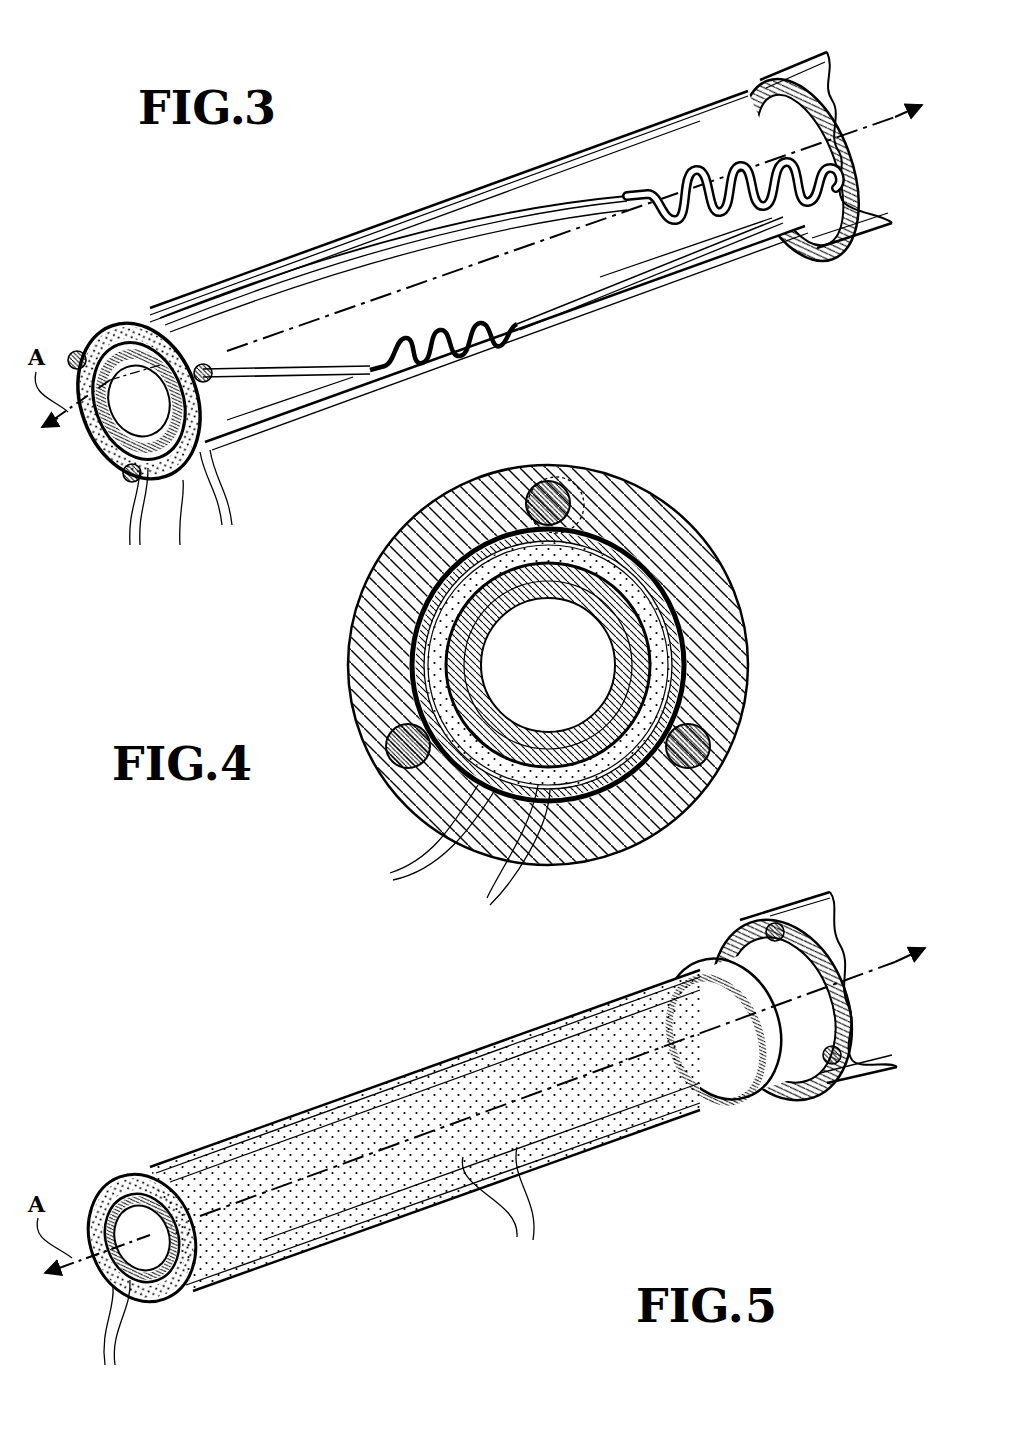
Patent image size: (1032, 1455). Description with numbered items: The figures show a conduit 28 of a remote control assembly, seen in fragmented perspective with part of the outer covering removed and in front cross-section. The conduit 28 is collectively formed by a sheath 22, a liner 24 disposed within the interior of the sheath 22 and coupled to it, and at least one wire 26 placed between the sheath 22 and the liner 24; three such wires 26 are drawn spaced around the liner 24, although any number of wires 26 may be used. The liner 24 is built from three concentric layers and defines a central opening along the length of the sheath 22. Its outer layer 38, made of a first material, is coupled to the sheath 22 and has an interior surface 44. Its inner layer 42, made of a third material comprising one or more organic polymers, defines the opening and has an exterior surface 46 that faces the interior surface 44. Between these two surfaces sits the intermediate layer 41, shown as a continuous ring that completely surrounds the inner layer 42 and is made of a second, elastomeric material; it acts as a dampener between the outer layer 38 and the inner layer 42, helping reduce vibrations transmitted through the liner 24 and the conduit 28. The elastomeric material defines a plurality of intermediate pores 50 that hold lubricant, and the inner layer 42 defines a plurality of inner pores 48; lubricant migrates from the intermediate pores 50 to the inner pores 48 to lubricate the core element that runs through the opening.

In FIG. 3, the sheath 22 is at (777, 77).
In FIG. 4, the sheath 22 is at (730, 600).
In FIG. 5, the sheath 22 is at (872, 1050).
In FIG. 3, the liner 24 is at (732, 268).
In FIG. 3, the wire 26 is at (503, 220).
In FIG. 4, the wire 26 is at (548, 503).
In FIG. 5, the wire 26 is at (803, 993).
In FIG. 3, the conduit 28 is at (585, 112).
In FIG. 4, the conduit 28 is at (775, 535).
In FIG. 5, the conduit 28 is at (897, 885).
In FIG. 3, the outer layer 38 is at (678, 245).
In FIG. 4, the outer layer 38 is at (667, 577).
In FIG. 5, the outer layer 38 is at (790, 1057).
In FIG. 3, the intermediate layer 41 is at (189, 521).
In FIG. 4, the intermediate layer 41 is at (655, 581).
In FIG. 5, the intermediate layer 41 is at (707, 1100).
In FIG. 3, the inner layer 42 is at (118, 442).
In FIG. 4, the inner layer 42 is at (614, 581).
In FIG. 4, the interior surface 44 is at (582, 565).
In FIG. 5, the interior surface 44 is at (700, 985).
In FIG. 4, the exterior surface 46 is at (590, 552).
In FIG. 5, the exterior surface 46 is at (193, 1263).
In FIG. 3, the inner pores 48 is at (142, 515).
In FIG. 4, the inner pores 48 is at (427, 836).
In FIG. 5, the inner pores 48 is at (102, 1331).
In FIG. 3, the intermediate pores 50 is at (228, 493).
In FIG. 4, the intermediate pores 50 is at (502, 849).
In FIG. 5, the intermediate pores 50 is at (505, 1207).